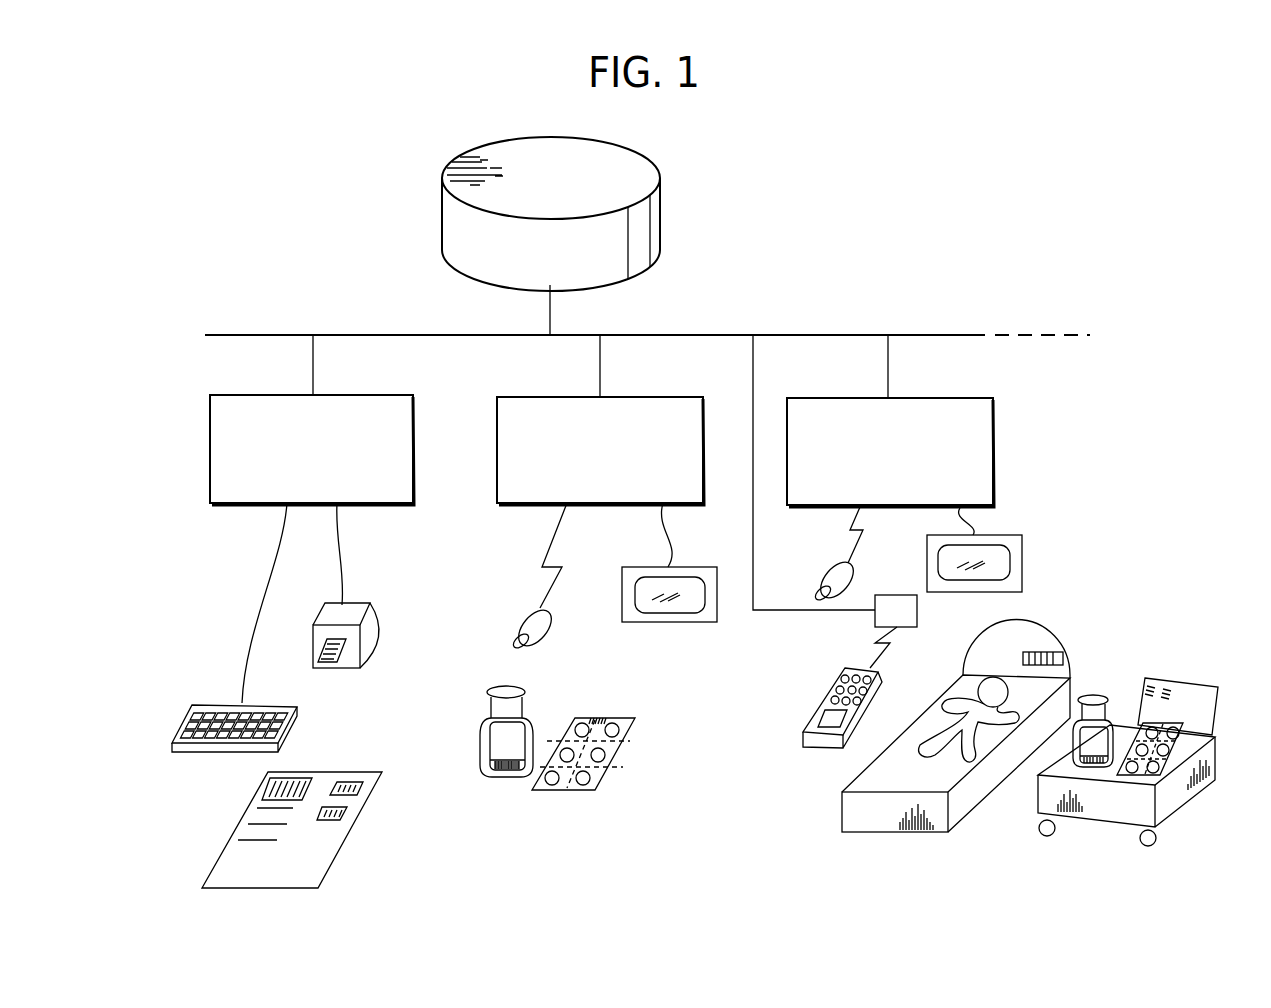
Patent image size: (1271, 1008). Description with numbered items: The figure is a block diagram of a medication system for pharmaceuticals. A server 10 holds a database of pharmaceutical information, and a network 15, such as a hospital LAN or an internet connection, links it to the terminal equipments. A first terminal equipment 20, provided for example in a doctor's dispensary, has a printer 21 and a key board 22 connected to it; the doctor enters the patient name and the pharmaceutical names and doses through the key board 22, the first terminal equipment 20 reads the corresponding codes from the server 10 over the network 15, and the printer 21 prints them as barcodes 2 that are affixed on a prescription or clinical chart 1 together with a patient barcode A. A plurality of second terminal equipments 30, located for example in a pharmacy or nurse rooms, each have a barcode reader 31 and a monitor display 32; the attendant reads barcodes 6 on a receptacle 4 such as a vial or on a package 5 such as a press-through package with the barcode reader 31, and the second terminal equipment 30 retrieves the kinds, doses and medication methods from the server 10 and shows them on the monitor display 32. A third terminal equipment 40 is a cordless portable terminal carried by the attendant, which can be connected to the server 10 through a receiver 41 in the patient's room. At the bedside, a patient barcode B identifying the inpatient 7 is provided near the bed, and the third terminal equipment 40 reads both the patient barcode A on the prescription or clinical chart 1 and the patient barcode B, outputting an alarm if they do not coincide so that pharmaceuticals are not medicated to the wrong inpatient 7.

The server 10 is at (661, 207).
The network 15 is at (665, 334).
The first terminal equipment 20 is at (360, 393).
The printer 21 is at (366, 604).
The key board 22 is at (297, 712).
The prescription or clinical chart 1 is at (315, 855).
The barcode 2 is at (345, 650).
The patient barcode A is at (285, 777).
The second terminal equipment 30 is at (668, 396).
The barcode reader 31 is at (535, 612).
The monitor display 32 is at (662, 623).
The receptacle 4 is at (502, 777).
The package 5 is at (567, 790).
The barcode 6 is at (493, 770).
The receiver 41 is at (917, 615).
The third terminal equipment 40 is at (818, 745).
The inpatient 7 is at (967, 765).
The patient barcode B is at (1070, 652).